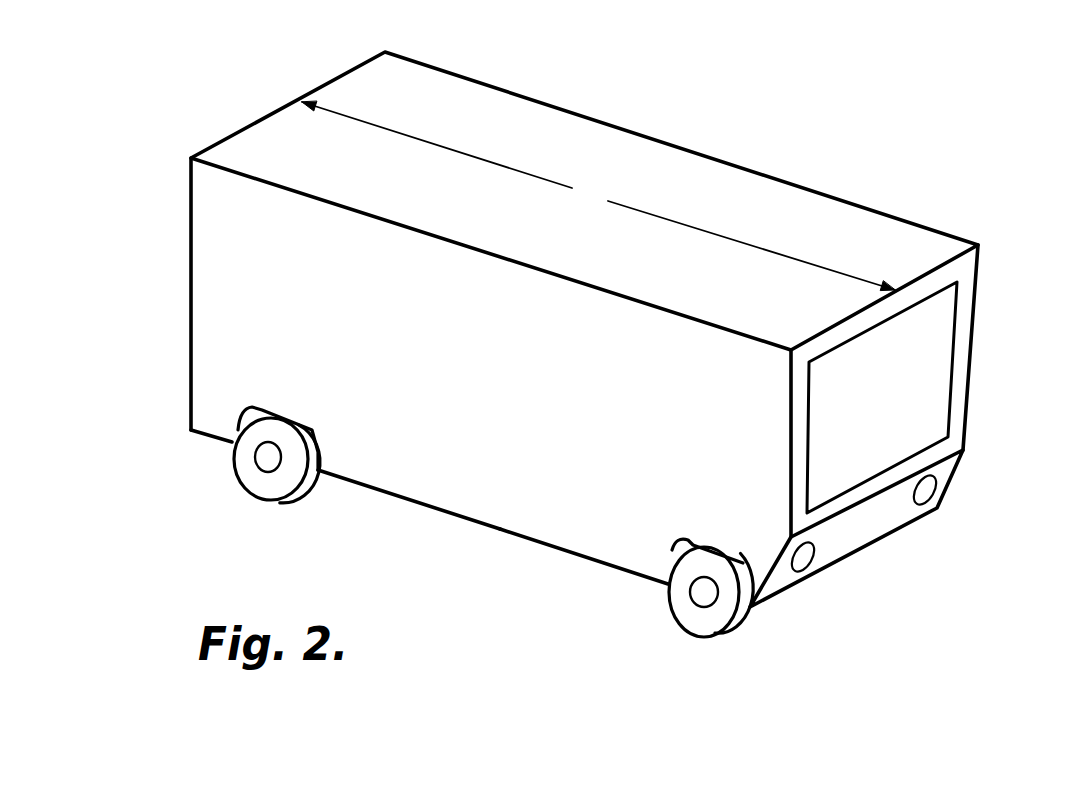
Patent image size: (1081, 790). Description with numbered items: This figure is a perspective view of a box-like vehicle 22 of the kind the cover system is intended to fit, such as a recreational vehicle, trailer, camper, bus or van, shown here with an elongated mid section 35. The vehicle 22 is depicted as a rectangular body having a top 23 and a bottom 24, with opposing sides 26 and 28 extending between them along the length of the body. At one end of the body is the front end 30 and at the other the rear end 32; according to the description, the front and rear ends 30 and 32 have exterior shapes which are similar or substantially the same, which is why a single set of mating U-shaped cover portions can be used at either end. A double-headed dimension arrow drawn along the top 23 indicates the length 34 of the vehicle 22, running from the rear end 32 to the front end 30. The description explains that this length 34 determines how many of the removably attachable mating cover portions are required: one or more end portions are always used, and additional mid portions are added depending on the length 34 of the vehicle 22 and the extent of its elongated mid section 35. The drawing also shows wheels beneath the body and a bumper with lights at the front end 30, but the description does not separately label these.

The vehicle 22 is at (790, 122).
The top 23 is at (850, 218).
The bottom 24 is at (610, 563).
The side 26 is at (233, 332).
The side 28 is at (512, 92).
The front end 30 is at (935, 380).
The rear end 32 is at (280, 110).
The length 34 is at (600, 192).
The elongated mid section 35 is at (502, 488).